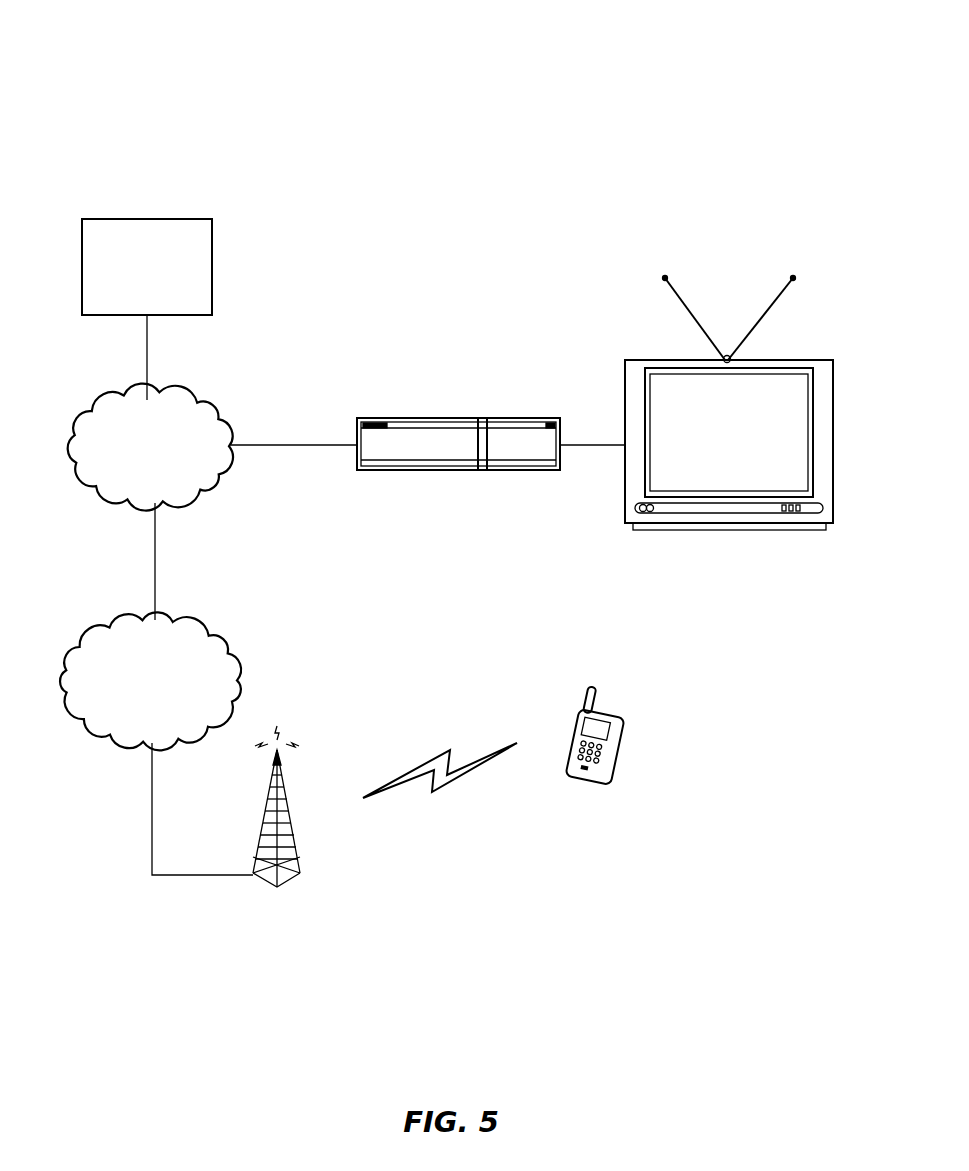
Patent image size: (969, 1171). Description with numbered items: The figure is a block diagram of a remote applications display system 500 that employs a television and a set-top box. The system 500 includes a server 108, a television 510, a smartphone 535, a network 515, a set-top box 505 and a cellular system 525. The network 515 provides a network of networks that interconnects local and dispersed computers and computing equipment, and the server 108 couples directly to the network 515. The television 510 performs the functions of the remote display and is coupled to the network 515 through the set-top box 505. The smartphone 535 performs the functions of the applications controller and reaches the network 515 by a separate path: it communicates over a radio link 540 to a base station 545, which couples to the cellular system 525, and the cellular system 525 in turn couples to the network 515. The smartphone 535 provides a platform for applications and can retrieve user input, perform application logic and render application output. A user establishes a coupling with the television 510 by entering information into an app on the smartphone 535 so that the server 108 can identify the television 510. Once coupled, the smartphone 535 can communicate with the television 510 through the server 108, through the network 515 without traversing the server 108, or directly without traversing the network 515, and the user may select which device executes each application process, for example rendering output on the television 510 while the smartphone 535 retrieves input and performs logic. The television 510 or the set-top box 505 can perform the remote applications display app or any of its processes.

The system 500 is at (398, 90).
The server 108 is at (175, 219).
The network 515 is at (125, 410).
The set-top box 505 is at (378, 418).
The television 510 is at (797, 360).
The cellular system 525 is at (130, 743).
The base station 545 is at (287, 798).
The radio link 540 is at (457, 777).
The smartphone 535 is at (568, 717).